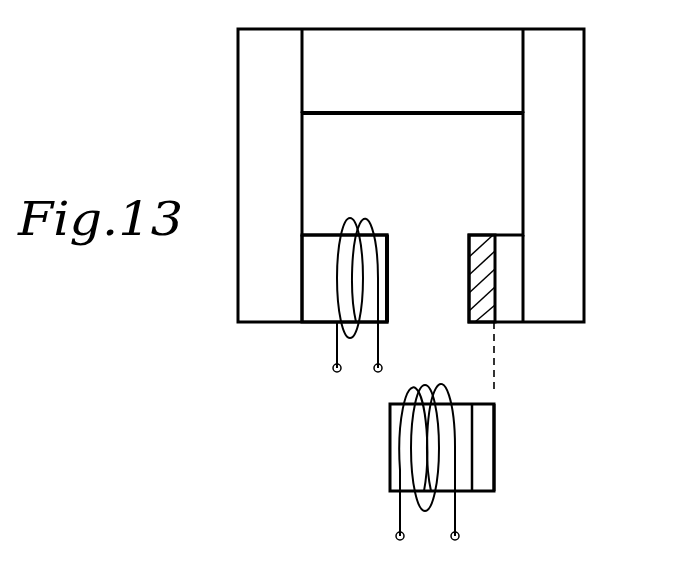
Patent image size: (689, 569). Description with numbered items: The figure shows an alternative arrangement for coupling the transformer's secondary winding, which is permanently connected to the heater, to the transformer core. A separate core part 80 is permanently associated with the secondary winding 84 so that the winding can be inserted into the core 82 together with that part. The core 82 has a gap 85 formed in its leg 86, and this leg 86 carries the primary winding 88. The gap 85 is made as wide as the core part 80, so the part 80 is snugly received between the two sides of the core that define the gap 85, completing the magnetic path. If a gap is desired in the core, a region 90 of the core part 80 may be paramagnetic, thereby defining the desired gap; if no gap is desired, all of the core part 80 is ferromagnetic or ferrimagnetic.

The core 82 is at (577, 202).
The secondary winding 84 is at (432, 388).
The gap 85 is at (449, 276).
The leg 86 is at (315, 313).
The primary winding 88 is at (356, 219).
The core part 80 is at (400, 448).
The region 90 is at (494, 491).